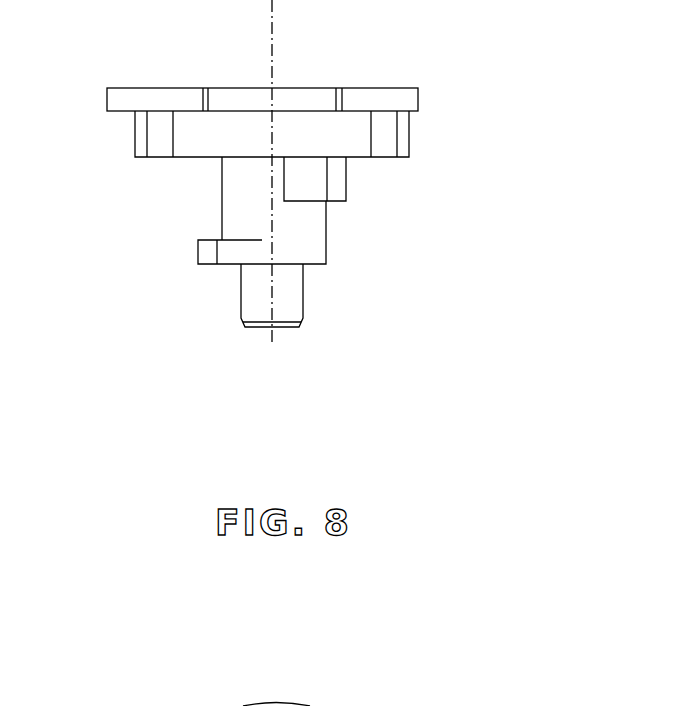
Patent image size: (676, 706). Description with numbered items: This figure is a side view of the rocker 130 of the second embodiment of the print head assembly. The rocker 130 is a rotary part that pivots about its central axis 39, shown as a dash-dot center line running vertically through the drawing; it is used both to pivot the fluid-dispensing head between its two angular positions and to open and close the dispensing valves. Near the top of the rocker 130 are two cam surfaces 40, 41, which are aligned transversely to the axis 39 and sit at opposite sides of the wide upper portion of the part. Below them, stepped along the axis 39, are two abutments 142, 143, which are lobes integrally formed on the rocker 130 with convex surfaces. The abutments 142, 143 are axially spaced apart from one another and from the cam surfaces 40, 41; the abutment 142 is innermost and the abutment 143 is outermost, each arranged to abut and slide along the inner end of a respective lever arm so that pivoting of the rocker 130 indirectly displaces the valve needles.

The axis 39 is at (274, 3).
The cam surface 40 is at (410, 137).
The cam surface 41 is at (135, 138).
The rocker 130 is at (274, 194).
The abutment 142 is at (205, 247).
The abutment 143 is at (347, 179).